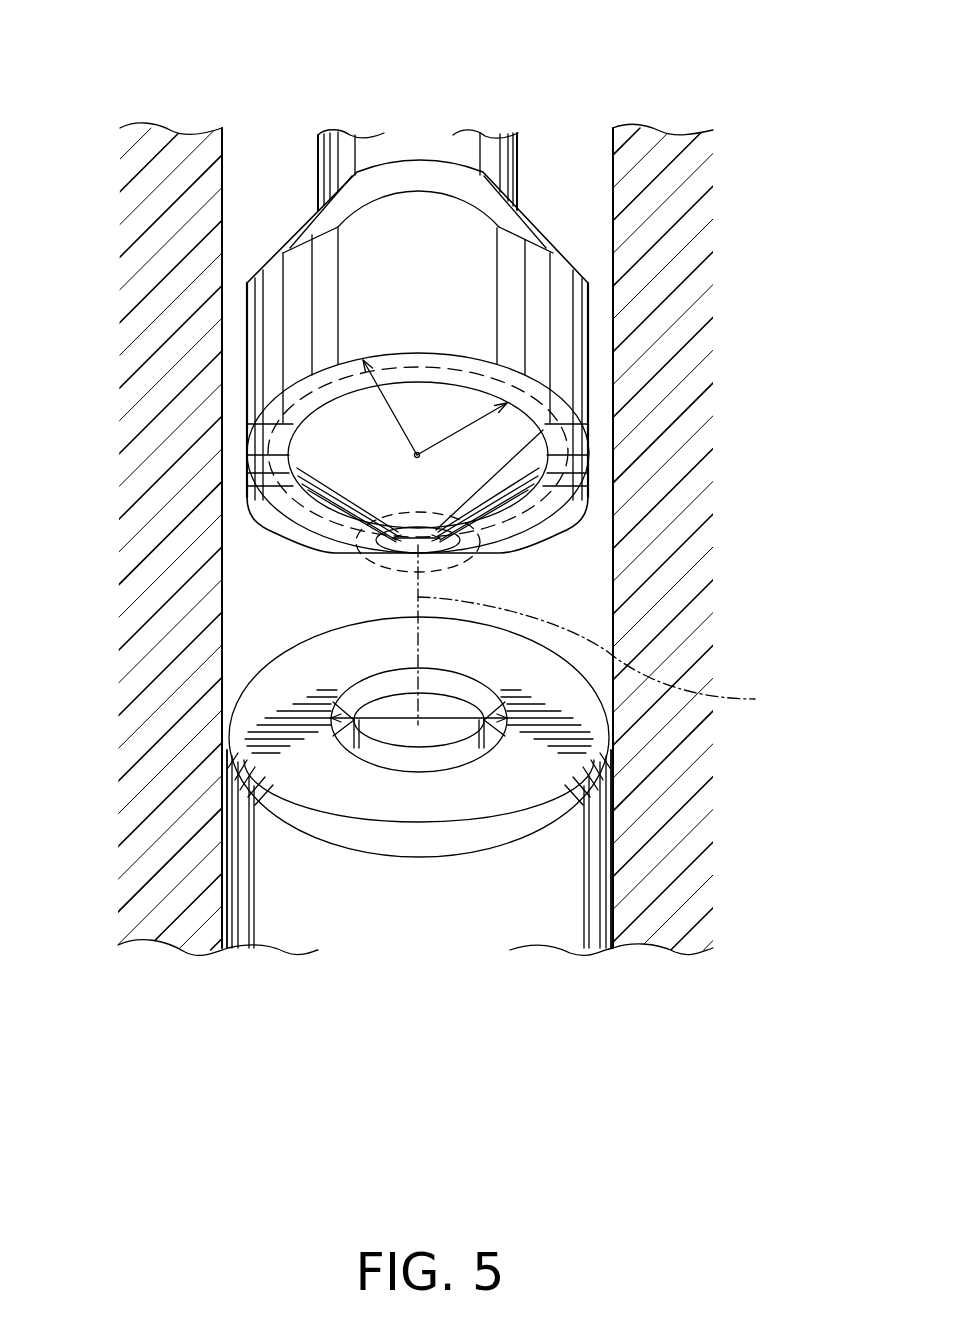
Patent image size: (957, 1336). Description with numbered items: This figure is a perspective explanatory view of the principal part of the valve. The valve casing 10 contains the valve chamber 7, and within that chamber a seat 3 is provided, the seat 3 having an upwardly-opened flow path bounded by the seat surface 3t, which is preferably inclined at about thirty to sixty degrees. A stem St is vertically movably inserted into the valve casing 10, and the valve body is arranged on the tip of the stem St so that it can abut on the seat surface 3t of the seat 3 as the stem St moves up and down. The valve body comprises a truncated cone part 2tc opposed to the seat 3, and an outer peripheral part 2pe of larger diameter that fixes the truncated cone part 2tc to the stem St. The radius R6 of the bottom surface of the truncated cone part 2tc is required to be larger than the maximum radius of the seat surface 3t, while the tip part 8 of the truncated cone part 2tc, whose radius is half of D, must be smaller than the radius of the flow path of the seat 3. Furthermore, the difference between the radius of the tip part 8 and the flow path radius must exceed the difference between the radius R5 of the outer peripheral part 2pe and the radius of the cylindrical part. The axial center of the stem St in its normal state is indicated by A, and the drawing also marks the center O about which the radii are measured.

The valve chamber 7 is at (253, 128).
The outer peripheral part 2pe is at (297, 290).
The stem St is at (506, 162).
The radius of the bottom surface of the truncated cone part R6 is at (463, 430).
The radius of the outer peripheral part R5 is at (392, 545).
The center point O is at (417, 455).
The valve casing 10 is at (670, 473).
The truncated cone part 2tc is at (377, 480).
The tip part 8 is at (461, 556).
The diameter of the tip part D is at (412, 568).
The axial center of the stem A is at (598, 658).
The seat 3 is at (290, 862).
The seat surface 3t is at (455, 690).